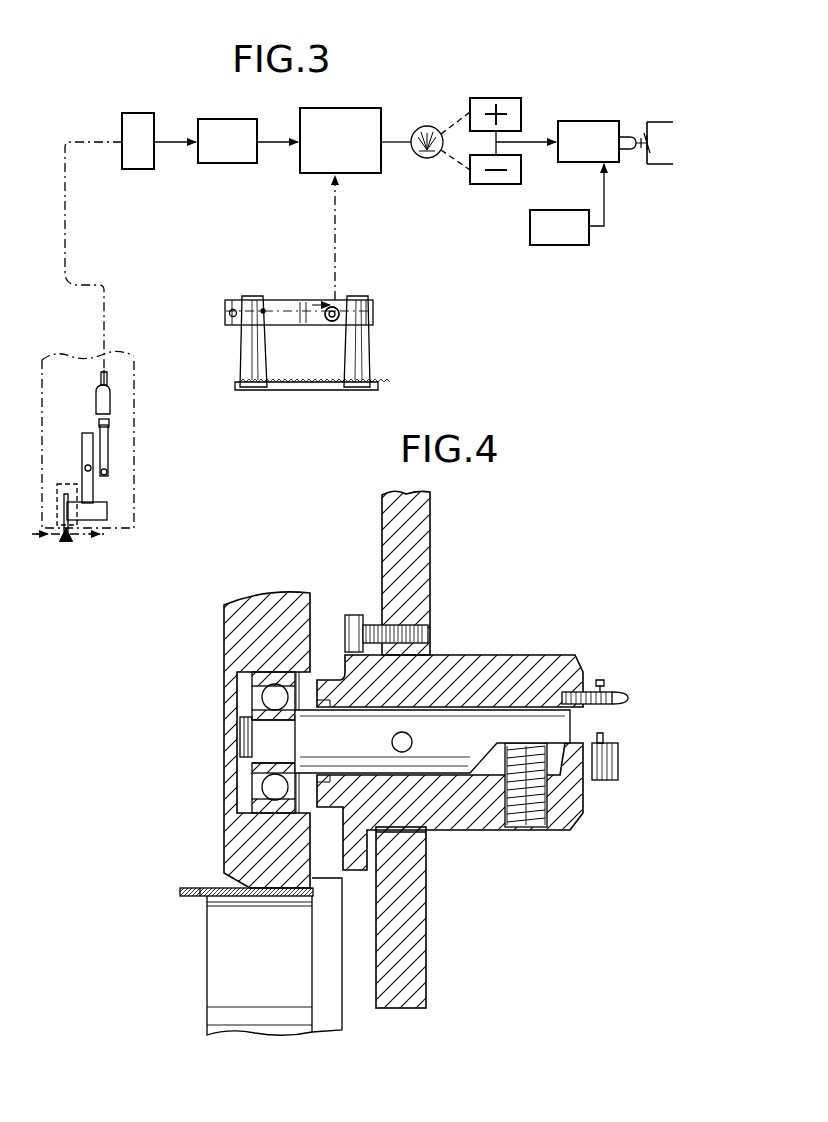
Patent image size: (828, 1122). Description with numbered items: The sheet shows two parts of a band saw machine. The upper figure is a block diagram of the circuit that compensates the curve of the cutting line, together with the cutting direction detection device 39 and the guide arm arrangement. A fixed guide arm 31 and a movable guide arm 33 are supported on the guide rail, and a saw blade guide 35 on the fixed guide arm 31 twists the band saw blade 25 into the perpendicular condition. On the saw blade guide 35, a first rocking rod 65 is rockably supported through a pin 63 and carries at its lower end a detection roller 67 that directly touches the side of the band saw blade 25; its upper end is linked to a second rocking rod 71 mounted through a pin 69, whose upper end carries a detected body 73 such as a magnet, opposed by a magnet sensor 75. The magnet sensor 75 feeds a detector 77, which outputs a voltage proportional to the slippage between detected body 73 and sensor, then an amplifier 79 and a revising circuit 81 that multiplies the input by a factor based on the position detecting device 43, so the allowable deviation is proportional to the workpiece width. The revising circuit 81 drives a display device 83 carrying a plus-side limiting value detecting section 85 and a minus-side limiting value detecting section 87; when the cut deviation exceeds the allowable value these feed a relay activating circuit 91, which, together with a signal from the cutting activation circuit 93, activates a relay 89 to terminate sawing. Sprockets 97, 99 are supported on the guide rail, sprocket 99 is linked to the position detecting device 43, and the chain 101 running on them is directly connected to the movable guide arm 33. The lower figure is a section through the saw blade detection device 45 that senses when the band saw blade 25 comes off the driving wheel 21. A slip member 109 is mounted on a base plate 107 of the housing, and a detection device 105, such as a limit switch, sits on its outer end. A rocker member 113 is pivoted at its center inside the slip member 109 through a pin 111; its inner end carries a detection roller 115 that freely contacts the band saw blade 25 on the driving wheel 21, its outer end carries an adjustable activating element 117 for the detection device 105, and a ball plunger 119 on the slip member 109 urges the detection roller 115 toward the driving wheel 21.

In FIG. 4, the driving wheel 21 is at (222, 972).
In FIG. 4, the band saw blade 25 is at (187, 898).
In FIG. 3, the fixed guide arm 31 is at (369, 352).
In FIG. 3, the movable guide arm 33 is at (242, 352).
In FIG. 3, the saw blade guide 35 is at (45, 395).
In FIG. 3, the cutting direction detection device 39 is at (130, 494).
In FIG. 3, the position detecting device 43 is at (338, 306).
In FIG. 4, the saw blade detection device 45 is at (278, 590).
In FIG. 3, the pin 63 is at (85, 468).
In FIG. 3, the first rocking rod 65 is at (85, 436).
In FIG. 3, the detection roller 67 is at (107, 512).
In FIG. 3, the pin 69 is at (108, 472).
In FIG. 3, the second rocking rod 71 is at (108, 447).
In FIG. 3, the detected body 73 is at (109, 423).
In FIG. 3, the magnet sensor 75 is at (110, 398).
In FIG. 3, the detector 77 is at (127, 153).
In FIG. 3, the amplifier 79 is at (216, 153).
In FIG. 3, the revising circuit 81 is at (329, 153).
In FIG. 3, the display device 83 is at (424, 160).
In FIG. 3, the limiting value detecting section 85 is at (498, 98).
In FIG. 3, the limiting value detecting section 87 is at (494, 184).
In FIG. 3, the relay 89 is at (641, 126).
In FIG. 3, the relay activating circuit 91 is at (577, 153).
In FIG. 3, the cutting activation circuit 93 is at (548, 238).
In FIG. 3, the sprocket 97 is at (229, 313).
In FIG. 3, the sprocket 99 is at (331, 322).
In FIG. 3, the chain 101 is at (279, 325).
In FIG. 4, the detection device 105 is at (606, 718).
In FIG. 4, the base plate 107 is at (418, 966).
In FIG. 4, the slip member 109 is at (492, 658).
In FIG. 4, the pin 111 is at (410, 737).
In FIG. 4, the rocker member 113 is at (463, 776).
In FIG. 4, the detection roller 115 is at (232, 838).
In FIG. 4, the activating element 117 is at (598, 784).
In FIG. 4, the ball plunger 119 is at (526, 812).